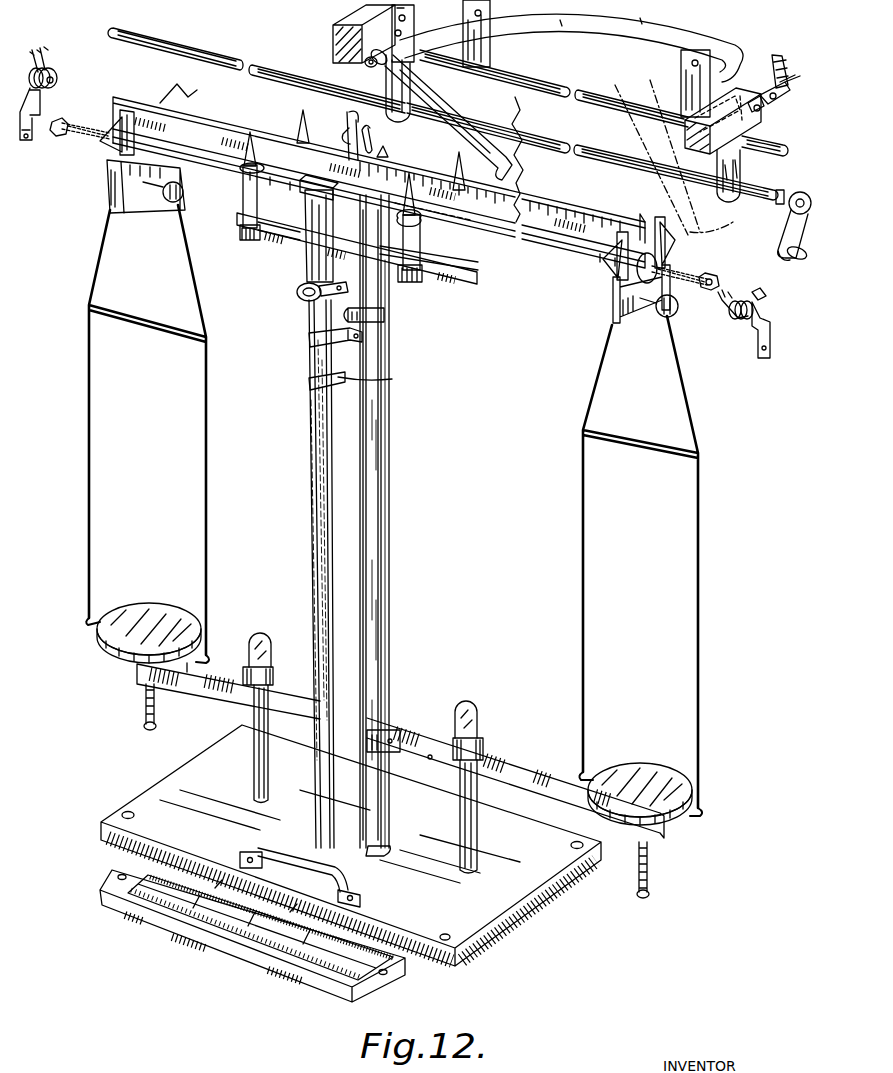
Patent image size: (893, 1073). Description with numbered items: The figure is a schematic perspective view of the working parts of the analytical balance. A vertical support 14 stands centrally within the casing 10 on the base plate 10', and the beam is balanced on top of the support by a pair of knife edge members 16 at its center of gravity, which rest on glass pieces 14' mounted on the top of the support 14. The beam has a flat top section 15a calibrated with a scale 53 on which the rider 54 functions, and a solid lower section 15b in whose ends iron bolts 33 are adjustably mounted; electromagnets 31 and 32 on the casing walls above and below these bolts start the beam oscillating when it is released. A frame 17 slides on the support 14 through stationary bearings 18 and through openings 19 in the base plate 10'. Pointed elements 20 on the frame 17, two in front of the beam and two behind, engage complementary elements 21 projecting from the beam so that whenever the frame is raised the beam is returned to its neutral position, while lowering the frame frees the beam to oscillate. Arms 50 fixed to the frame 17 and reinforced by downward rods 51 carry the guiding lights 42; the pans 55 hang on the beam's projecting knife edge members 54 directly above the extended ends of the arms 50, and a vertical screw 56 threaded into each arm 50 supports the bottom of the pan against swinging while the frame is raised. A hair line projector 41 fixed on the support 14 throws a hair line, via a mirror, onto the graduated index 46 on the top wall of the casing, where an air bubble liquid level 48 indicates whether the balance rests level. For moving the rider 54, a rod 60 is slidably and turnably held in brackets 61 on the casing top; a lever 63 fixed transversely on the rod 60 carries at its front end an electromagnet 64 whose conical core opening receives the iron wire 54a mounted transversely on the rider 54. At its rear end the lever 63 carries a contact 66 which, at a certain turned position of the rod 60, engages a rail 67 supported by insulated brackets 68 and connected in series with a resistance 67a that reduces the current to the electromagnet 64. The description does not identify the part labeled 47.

The casing 10 is at (544, 59).
The base plate 10' is at (351, 845).
The vertical support 14 is at (395, 521).
The glass pieces 14' is at (292, 236).
The flat top section 15a is at (620, 215).
The solid lower section 15b is at (568, 262).
The knife edge members 16 is at (322, 182).
The frame 17 is at (379, 530).
The bearings 18 is at (386, 318).
The openings 19 is at (380, 856).
The pointed elements 20 is at (242, 210).
The complementary elements 21 is at (300, 114).
The electromagnet 31 is at (50, 78).
The electromagnet 32 is at (735, 322).
The iron bolts 33 is at (85, 122).
The hair line projector 41 is at (307, 318).
The guiding lights 42 is at (264, 634).
The index 46 is at (255, 940).
The crossbar 47 is at (366, 246).
The air bubble liquid level 48 is at (278, 846).
The arms 50 is at (280, 695).
The rods 51 is at (270, 760).
The scale 53 is at (556, 210).
The rider 54 is at (104, 145).
The iron wire 54a is at (372, 143).
The pans 55 is at (155, 607).
The vertical screw 56 is at (144, 694).
The rod 60 is at (190, 55).
The brackets 61 is at (414, 28).
The lever 63 is at (372, 68).
The electromagnet 64 is at (330, 42).
The contact 66 is at (490, 140).
The rail 67 is at (526, 82).
The resistance 67a is at (662, 26).
The insulated brackets 68 is at (490, 50).